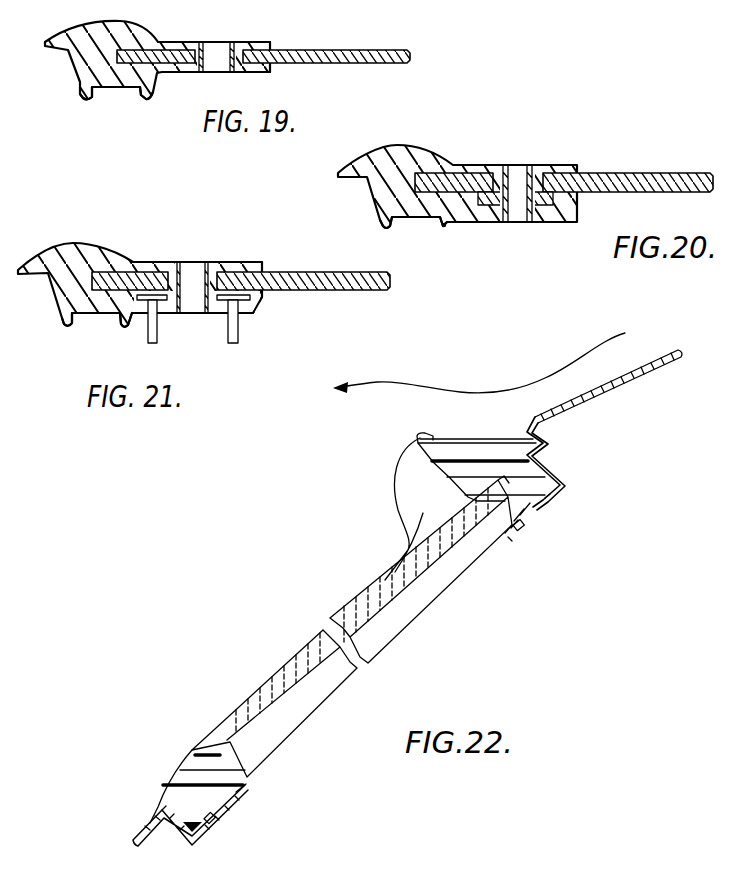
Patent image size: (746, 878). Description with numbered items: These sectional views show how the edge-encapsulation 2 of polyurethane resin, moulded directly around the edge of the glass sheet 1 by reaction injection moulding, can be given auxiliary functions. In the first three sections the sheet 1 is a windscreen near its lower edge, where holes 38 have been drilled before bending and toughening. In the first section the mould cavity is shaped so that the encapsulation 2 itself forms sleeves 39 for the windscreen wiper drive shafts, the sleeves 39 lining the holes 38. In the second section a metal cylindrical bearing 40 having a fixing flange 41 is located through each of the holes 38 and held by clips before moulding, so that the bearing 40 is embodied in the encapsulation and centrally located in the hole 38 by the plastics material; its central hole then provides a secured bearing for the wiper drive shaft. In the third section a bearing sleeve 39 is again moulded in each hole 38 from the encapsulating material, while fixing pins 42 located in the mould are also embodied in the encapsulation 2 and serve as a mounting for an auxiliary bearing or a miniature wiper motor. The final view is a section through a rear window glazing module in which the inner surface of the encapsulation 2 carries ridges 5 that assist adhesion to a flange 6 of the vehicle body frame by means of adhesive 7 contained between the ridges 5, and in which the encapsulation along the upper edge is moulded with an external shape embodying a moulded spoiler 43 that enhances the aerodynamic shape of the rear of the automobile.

In FIG. 19, the sheet of glass 1 is at (370, 53).
In FIG. 20, the sheet of glass 1 is at (670, 178).
In FIG. 21, the sheet of glass 1 is at (340, 277).
In FIG. 22, the sheet of glass 1 is at (445, 562).
In FIG. 19, the edge-encapsulation 2 is at (102, 42).
In FIG. 20, the edge-encapsulation 2 is at (415, 163).
In FIG. 21, the edge-encapsulation 2 is at (72, 262).
In FIG. 22, the edge-encapsulation 2 is at (520, 483).
In FIG. 19, the ridges 5 is at (140, 100).
In FIG. 20, the ridges 5 is at (440, 223).
In FIG. 21, the ridges 5 is at (120, 327).
In FIG. 22, the ridges 5 is at (545, 498).
In FIG. 22, the flange 6 is at (519, 532).
In FIG. 22, the adhesive 7 is at (534, 521).
In FIG. 19, the holes 38 is at (240, 47).
In FIG. 20, the holes 38 is at (533, 172).
In FIG. 21, the holes 38 is at (212, 267).
In FIG. 19, the sleeves 39 is at (210, 47).
In FIG. 21, the sleeves 39 is at (183, 280).
In FIG. 20, the metal cylindrical bearing 40 is at (533, 206).
In FIG. 20, the fixing flange 41 is at (487, 206).
In FIG. 21, the fixing pins 42 is at (227, 338).
In FIG. 22, the moulded spoiler 43 is at (437, 448).